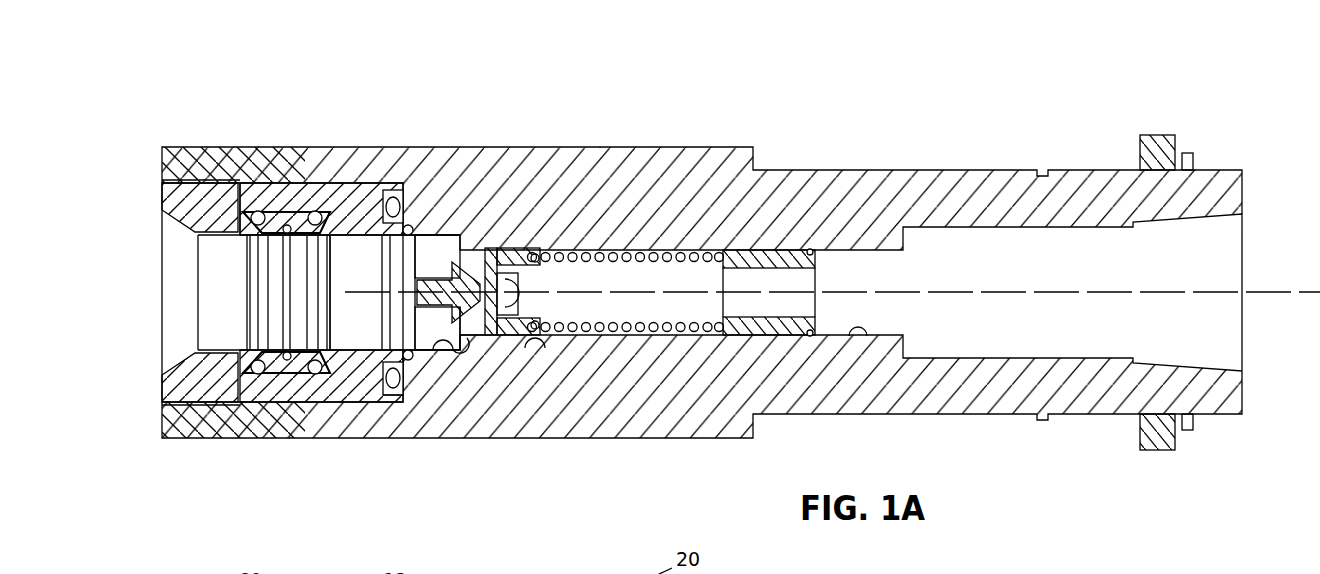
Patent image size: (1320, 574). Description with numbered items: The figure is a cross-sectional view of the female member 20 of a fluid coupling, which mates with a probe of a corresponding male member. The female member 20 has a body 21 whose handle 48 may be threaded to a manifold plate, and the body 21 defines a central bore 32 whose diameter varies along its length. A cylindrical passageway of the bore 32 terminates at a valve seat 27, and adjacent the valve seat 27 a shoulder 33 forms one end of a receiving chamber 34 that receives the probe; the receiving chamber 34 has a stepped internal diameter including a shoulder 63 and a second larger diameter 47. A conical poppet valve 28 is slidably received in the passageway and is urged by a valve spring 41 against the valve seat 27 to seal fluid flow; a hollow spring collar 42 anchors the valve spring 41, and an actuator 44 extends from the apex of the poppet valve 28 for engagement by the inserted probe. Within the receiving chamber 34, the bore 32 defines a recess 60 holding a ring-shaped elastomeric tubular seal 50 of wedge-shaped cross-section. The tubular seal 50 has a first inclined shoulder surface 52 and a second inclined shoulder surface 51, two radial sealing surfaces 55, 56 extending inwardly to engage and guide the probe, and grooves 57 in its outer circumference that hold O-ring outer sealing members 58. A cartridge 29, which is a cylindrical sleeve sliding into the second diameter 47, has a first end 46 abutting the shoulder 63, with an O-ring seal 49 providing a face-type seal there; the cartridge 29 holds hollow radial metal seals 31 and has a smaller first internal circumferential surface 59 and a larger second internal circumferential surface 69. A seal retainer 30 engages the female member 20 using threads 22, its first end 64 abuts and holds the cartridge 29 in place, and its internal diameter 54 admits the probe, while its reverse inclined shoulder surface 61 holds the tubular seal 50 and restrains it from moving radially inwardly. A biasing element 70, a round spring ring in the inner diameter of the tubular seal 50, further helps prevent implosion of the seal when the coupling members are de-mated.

The female member 20 is at (584, 124).
The body 21 is at (702, 273).
The threads 22 is at (315, 331).
The valve seat 27 is at (536, 400).
The poppet valve 28 is at (487, 220).
The cartridge 29 is at (414, 444).
The seal retainer 30 is at (165, 306).
The radial metal seals 31 is at (436, 208).
The bore 32 is at (898, 384).
The shoulder 33 is at (537, 405).
The receiving chamber 34 is at (510, 404).
The valve spring 41 is at (735, 226).
The spring collar 42 is at (714, 224).
The actuator 44 is at (512, 217).
The first end of the cartridge 46 is at (471, 419).
The second larger diameter 47 is at (337, 208).
The handle 48 is at (1136, 267).
The O-ring seal 49 is at (463, 405).
The tubular seal 50 is at (245, 145).
The second inclined shoulder surface 51 is at (175, 172).
The first inclined shoulder surface 52 is at (382, 196).
The internal diameter 54 is at (276, 295).
The radial sealing surface 55 is at (200, 242).
The radial sealing surface 56 is at (206, 292).
The grooves 57 is at (290, 420).
The outer sealing members 58 is at (347, 426).
The first internal circumferential surface 59 is at (396, 225).
The recess 60 is at (282, 233).
The reverse inclined shoulder surface 61 is at (157, 245).
The shoulder 63 is at (436, 217).
The first end of the seal retainer 64 is at (216, 154).
The second internal circumferential surface 69 is at (187, 141).
The biasing element 70 is at (194, 319).